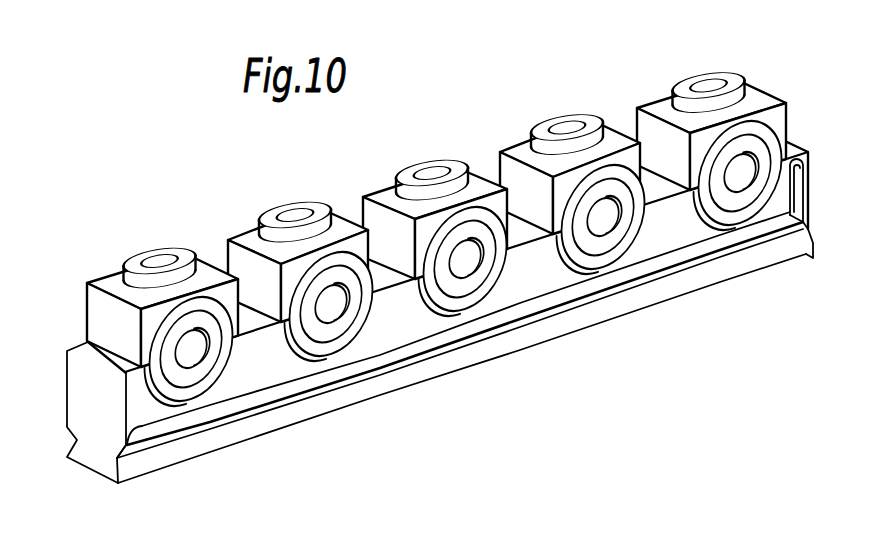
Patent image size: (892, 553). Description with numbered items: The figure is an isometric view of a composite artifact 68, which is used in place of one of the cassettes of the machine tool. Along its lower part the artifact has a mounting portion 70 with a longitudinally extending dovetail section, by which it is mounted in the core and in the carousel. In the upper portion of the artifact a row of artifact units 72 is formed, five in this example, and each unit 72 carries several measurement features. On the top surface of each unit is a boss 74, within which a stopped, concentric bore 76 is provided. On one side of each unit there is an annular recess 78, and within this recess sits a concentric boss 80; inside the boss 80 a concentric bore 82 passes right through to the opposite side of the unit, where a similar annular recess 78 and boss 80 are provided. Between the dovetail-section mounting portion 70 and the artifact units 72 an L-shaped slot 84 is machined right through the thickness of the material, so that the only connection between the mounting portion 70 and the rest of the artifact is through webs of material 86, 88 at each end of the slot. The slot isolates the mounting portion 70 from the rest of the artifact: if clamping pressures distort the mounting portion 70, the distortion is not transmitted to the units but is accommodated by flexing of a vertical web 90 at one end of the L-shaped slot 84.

The composite artifact 68 is at (68, 329).
The mounting portion 70 is at (118, 479).
The artifact unit 72 is at (108, 281).
The boss 74 is at (128, 262).
The bore 76 is at (160, 261).
The annular recess 78 is at (191, 402).
The boss 80 is at (210, 352).
The bore 82 is at (203, 365).
The L-shaped slot 84 is at (686, 258).
The web of material 86 is at (122, 444).
The web of material 88 is at (797, 148).
The vertical web 90 is at (808, 187).